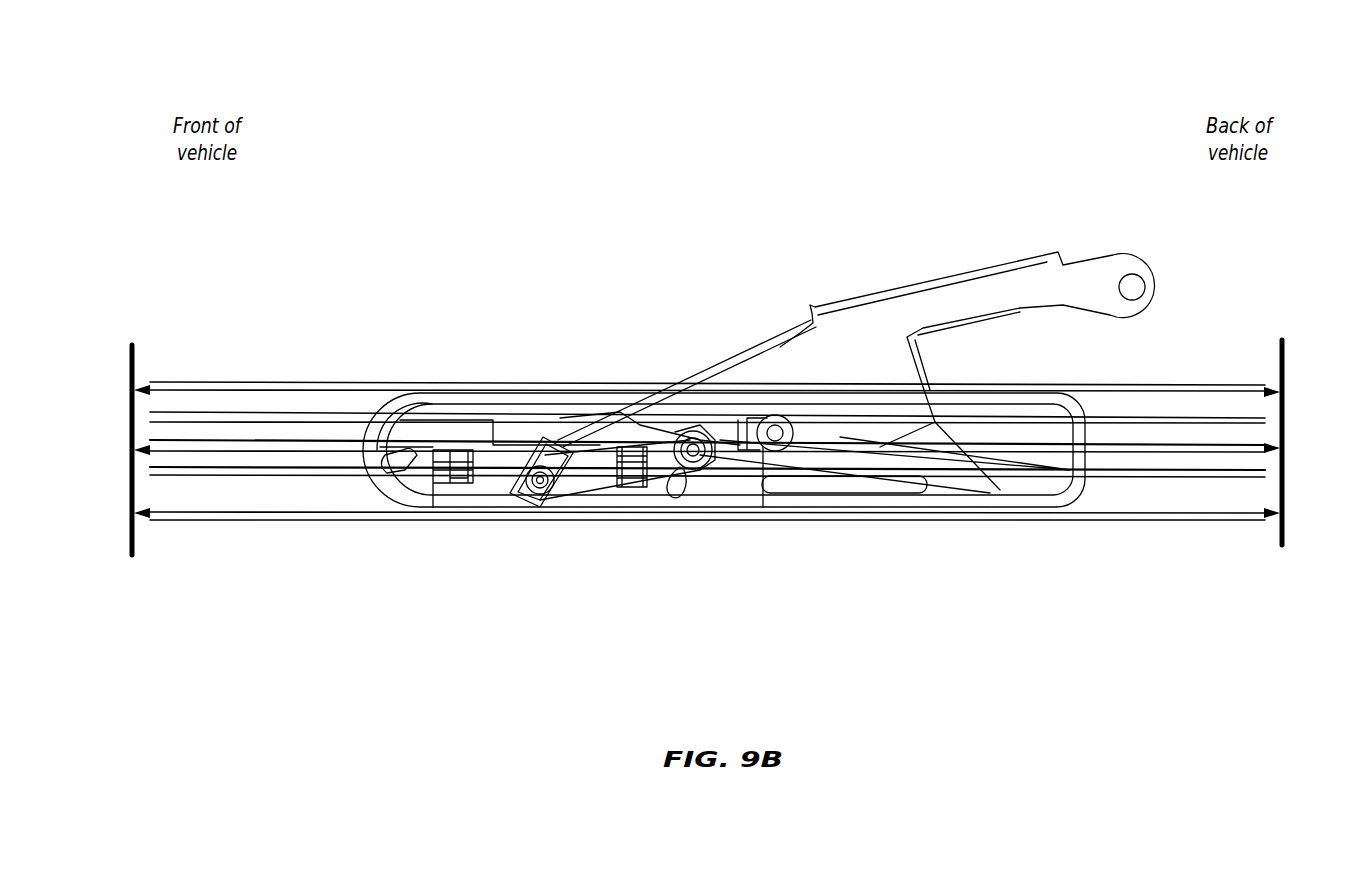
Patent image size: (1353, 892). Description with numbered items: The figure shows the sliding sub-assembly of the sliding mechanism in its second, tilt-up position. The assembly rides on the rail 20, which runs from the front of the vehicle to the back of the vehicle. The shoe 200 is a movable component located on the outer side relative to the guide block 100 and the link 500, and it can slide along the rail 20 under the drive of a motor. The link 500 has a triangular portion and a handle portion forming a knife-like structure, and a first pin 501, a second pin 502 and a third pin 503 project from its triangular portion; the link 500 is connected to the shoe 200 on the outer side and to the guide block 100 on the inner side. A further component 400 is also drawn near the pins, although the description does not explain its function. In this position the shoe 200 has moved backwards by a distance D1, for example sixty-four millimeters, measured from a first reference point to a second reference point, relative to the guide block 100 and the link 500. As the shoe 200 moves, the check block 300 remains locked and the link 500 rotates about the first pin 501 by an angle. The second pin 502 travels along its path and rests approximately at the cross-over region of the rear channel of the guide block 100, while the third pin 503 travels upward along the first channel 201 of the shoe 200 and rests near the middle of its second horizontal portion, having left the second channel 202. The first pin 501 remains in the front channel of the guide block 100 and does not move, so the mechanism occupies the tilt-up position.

The rail 20 is at (170, 513).
The guide block 100 is at (488, 505).
The shoe 200 is at (403, 505).
The first channel 201 is at (362, 445).
The second channel 202 is at (620, 412).
The check block 300 is at (521, 505).
The pivot pin 400 is at (683, 432).
The link 500 is at (1013, 260).
The first pin 501 is at (580, 518).
The second pin 502 is at (703, 472).
The third pin 503 is at (820, 487).
The distance D1 is at (362, 460).